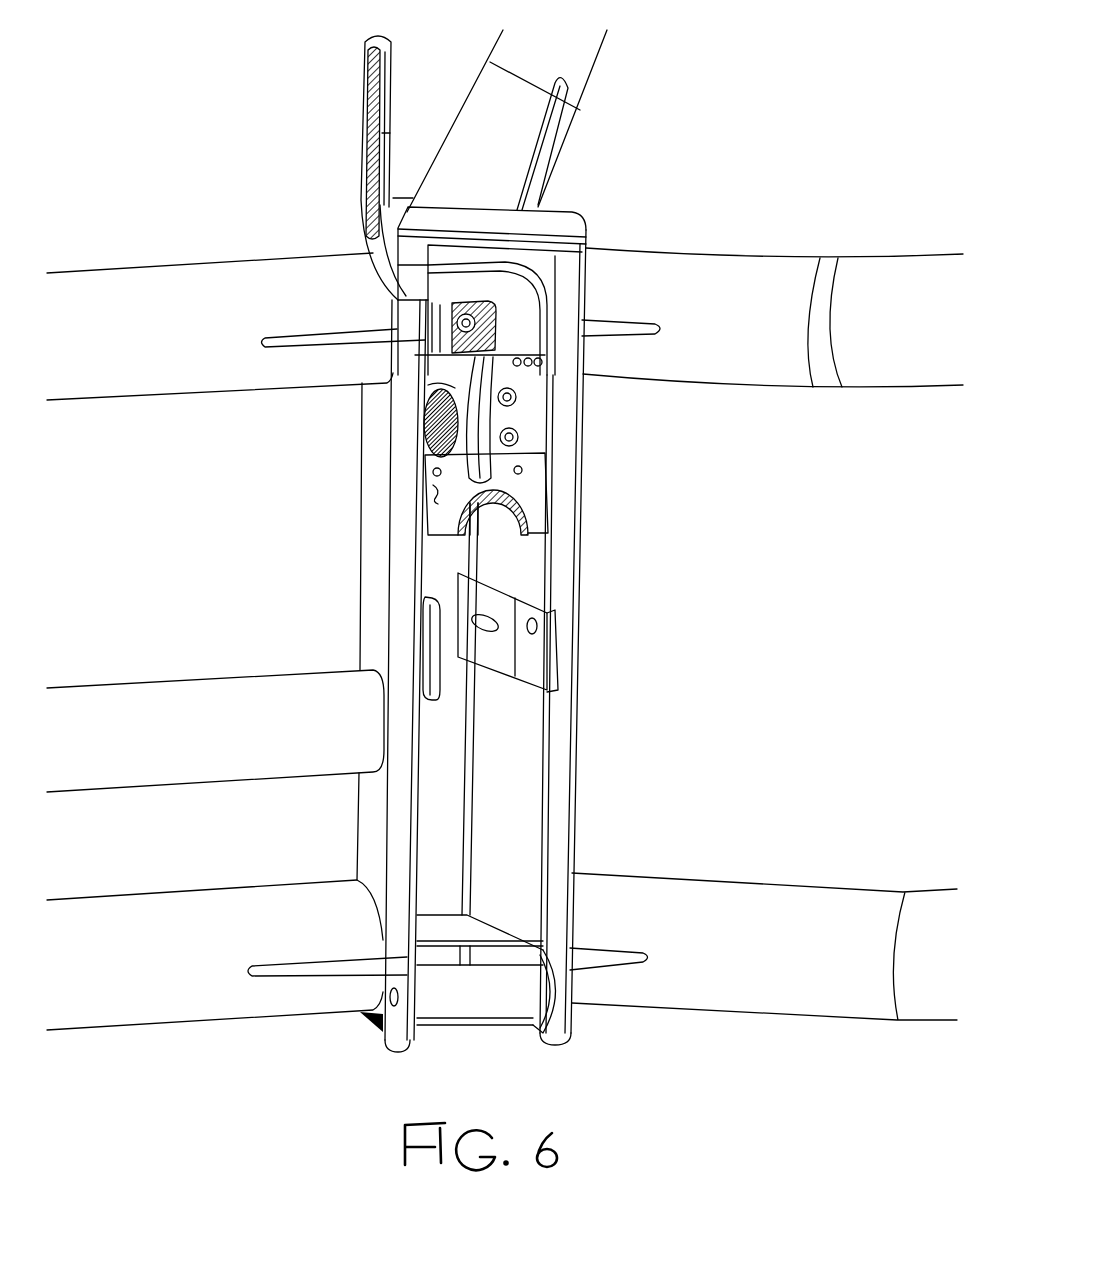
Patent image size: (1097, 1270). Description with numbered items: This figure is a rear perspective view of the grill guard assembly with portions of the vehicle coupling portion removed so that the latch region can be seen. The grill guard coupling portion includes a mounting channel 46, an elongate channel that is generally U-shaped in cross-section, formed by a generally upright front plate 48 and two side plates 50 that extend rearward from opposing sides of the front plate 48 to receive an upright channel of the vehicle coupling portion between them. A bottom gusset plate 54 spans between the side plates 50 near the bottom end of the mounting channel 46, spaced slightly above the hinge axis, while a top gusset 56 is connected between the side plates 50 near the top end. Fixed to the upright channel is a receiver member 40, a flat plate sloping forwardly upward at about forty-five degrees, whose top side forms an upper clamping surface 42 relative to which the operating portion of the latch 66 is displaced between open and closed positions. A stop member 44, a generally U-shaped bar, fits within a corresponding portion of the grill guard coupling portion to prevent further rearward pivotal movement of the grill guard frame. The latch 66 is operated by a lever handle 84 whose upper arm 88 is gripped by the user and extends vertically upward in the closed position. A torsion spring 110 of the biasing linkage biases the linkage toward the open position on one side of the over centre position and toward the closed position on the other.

The receiver member 40 is at (528, 486).
The upper clamping surface 42 is at (433, 488).
The stop member 44 is at (507, 607).
The mounting channel 46 is at (575, 753).
The front plate 48 is at (437, 792).
The side plates 50 is at (380, 602).
The bottom gusset plate 54 is at (463, 933).
The top gusset 56 is at (548, 328).
The latch 66 is at (540, 394).
The lever handle 84 is at (324, 163).
The upper arm 88 is at (363, 104).
The spring 110 is at (425, 402).